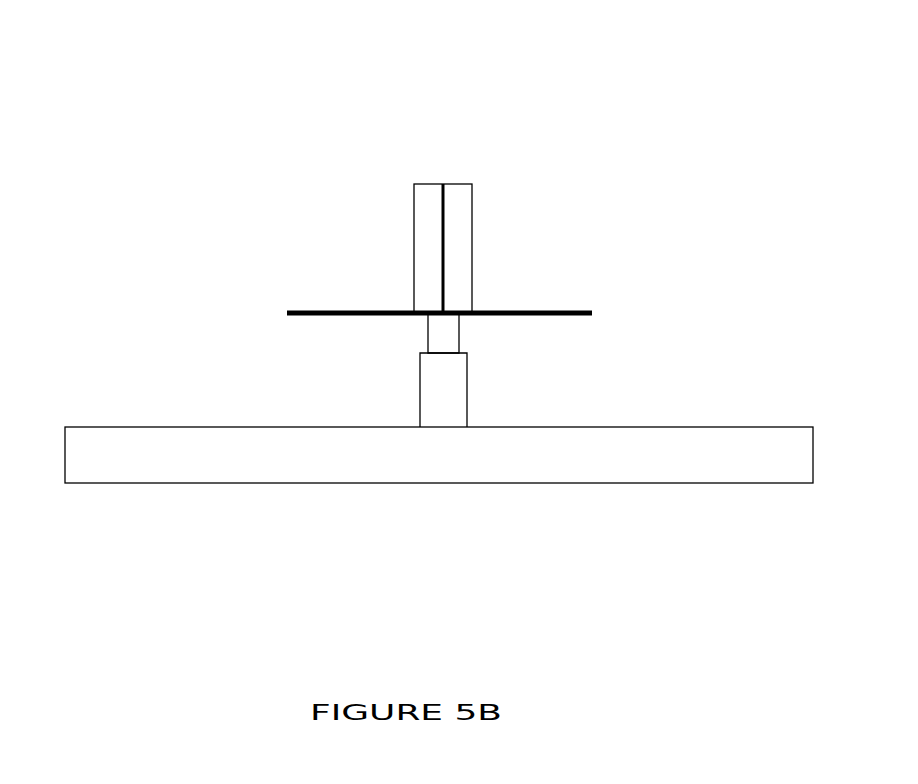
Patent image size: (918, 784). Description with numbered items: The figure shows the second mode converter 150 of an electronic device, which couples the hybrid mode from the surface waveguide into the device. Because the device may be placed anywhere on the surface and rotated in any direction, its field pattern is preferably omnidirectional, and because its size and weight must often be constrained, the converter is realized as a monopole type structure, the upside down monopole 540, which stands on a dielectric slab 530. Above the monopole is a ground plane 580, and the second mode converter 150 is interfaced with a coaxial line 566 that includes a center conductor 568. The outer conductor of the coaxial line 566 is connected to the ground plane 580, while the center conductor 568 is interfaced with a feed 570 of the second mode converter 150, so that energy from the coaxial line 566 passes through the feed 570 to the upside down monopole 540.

The second mode converter 150 is at (207, 248).
The dielectric slab 530 is at (561, 476).
The upside down monopole 540 is at (406, 387).
The coaxial line 566 is at (483, 236).
The center conductor 568 is at (447, 172).
The feed 570 is at (473, 334).
The ground plane 580 is at (576, 303).